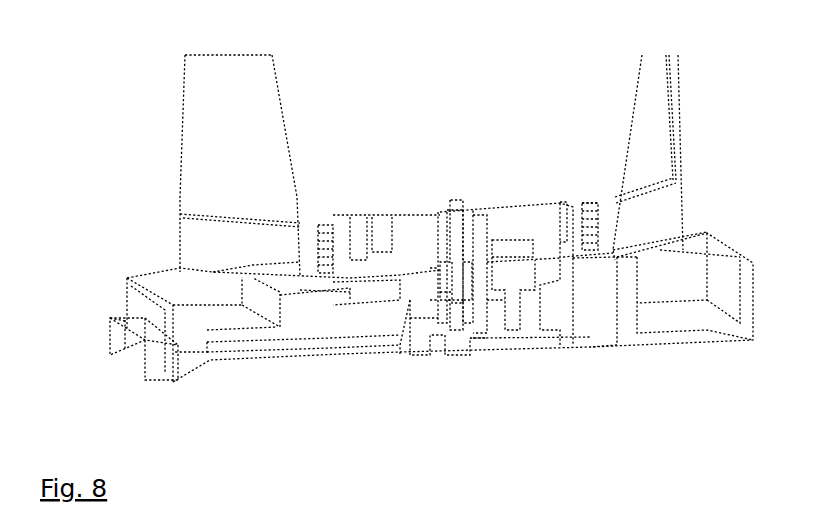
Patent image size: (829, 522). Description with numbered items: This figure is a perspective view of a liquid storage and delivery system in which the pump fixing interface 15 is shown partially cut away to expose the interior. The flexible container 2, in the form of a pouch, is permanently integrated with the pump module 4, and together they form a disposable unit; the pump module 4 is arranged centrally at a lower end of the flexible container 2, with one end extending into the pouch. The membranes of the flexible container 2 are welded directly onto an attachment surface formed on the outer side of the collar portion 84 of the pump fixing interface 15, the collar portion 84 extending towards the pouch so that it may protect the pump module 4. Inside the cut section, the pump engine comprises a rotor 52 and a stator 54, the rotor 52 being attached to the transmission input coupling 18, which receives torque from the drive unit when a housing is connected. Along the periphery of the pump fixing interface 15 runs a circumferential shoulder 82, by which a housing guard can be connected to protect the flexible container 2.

The flexible container 2 is at (150, 178).
The pump module 4 is at (418, 268).
The pump fixing interface 15 is at (617, 285).
The transmission input coupling 18 is at (473, 333).
The rotor 52 is at (445, 299).
The stator 54 is at (433, 293).
The circumferential shoulder 82 is at (124, 320).
The collar portion 84 is at (575, 217).